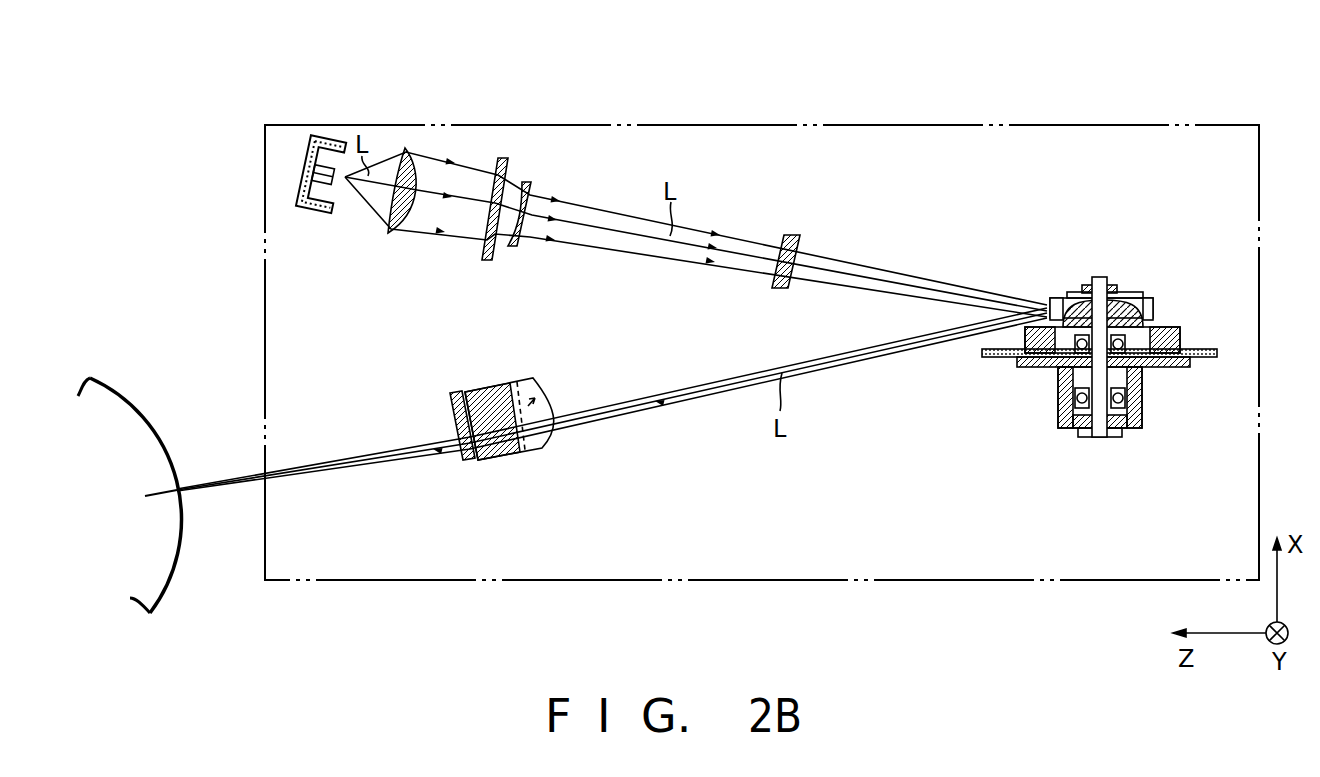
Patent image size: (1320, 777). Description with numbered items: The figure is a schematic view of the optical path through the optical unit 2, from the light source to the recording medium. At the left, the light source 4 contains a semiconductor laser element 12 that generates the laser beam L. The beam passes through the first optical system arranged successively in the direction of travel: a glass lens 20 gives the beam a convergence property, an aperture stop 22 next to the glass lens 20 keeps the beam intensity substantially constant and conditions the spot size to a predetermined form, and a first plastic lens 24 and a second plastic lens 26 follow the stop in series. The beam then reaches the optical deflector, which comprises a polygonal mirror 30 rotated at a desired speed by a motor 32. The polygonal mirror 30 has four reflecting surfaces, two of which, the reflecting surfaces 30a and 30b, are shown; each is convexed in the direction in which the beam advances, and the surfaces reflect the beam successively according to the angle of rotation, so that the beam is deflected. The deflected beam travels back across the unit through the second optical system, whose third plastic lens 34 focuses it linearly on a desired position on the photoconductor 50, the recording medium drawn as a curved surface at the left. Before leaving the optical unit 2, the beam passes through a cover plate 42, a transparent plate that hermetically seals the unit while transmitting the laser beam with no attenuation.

The optical unit 2 is at (1128, 122).
The light source 4 is at (336, 205).
The semiconductor laser element 12 is at (310, 212).
The glass lens 20 is at (408, 152).
The aperture stop 22 is at (505, 160).
The first plastic lens 24 is at (531, 196).
The second plastic lens 26 is at (790, 236).
The polygonal mirror 30 is at (1116, 275).
The reflecting surface 30a is at (1046, 308).
The reflecting surface 30b is at (1152, 308).
The motor 32 is at (1158, 423).
The third plastic lens 34 is at (546, 450).
The cover plate 42 is at (468, 461).
The photoconductor 50 is at (184, 541).